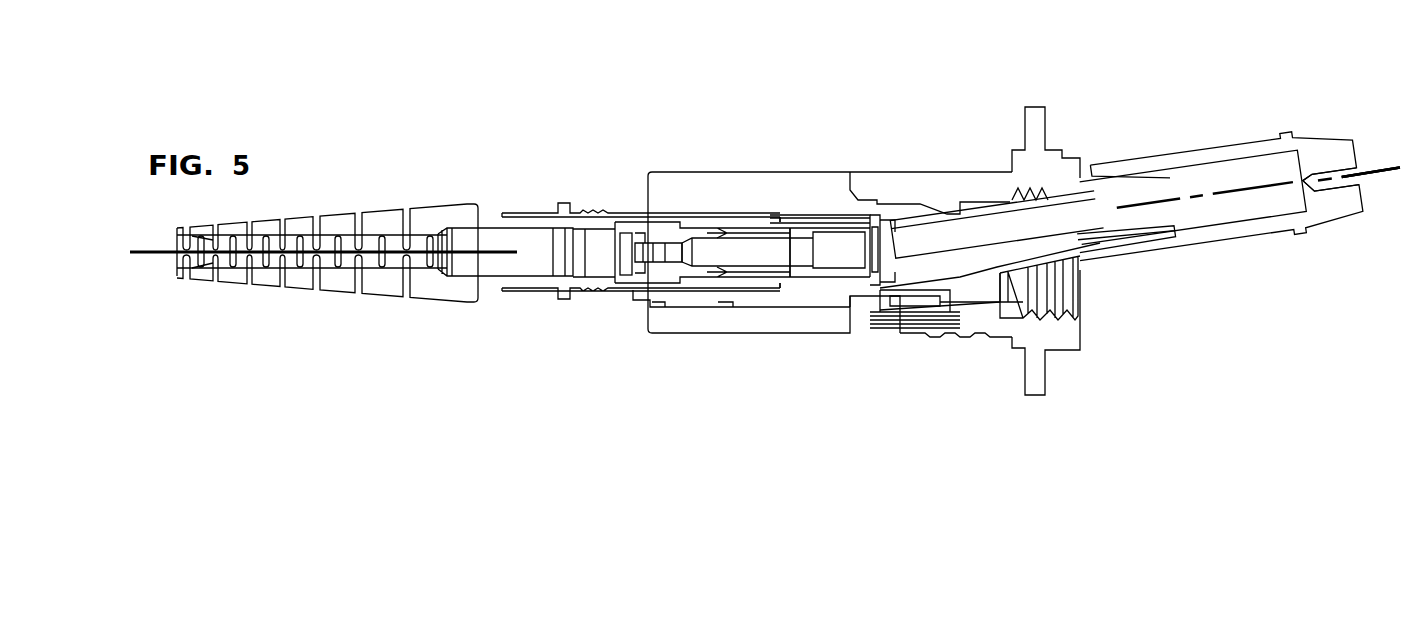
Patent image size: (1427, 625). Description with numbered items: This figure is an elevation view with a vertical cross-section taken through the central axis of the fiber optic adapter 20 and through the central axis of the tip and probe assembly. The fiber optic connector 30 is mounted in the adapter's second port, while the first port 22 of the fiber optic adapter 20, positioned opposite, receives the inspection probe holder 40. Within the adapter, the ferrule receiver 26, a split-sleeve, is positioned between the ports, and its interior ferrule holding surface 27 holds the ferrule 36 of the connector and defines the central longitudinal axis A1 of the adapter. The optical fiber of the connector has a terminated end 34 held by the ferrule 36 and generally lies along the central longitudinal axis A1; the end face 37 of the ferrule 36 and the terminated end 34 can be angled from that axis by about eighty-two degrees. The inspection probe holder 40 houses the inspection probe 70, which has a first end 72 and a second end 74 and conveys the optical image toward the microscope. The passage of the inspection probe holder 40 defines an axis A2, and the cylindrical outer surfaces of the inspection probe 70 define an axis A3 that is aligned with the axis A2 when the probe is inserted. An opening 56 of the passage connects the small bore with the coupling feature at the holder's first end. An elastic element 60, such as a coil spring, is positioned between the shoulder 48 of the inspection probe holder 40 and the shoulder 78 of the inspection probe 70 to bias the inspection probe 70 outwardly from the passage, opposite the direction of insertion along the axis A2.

The central longitudinal axis A1 is at (365, 253).
The fiber optic adapter 20 is at (843, 158).
The first port 22 is at (1063, 293).
The ferrule receiver 26 is at (834, 254).
The interior ferrule holding surface 27 is at (808, 270).
The fiber optic connector 30 is at (529, 203).
The terminated end 34 is at (832, 248).
The ferrule 36 is at (710, 262).
The end face 37 is at (832, 248).
The inspection probe holder 40 is at (1231, 136).
The shoulder 48 is at (1033, 247).
The opening 56 is at (895, 248).
The elastic element 60 is at (1142, 243).
The inspection probe 70 is at (1218, 206).
The first end 72 is at (1307, 202).
The second end 74 is at (880, 247).
The shoulder 78 is at (1180, 225).
The axis A2 is at (1378, 167).
The axis A3 is at (1378, 167).